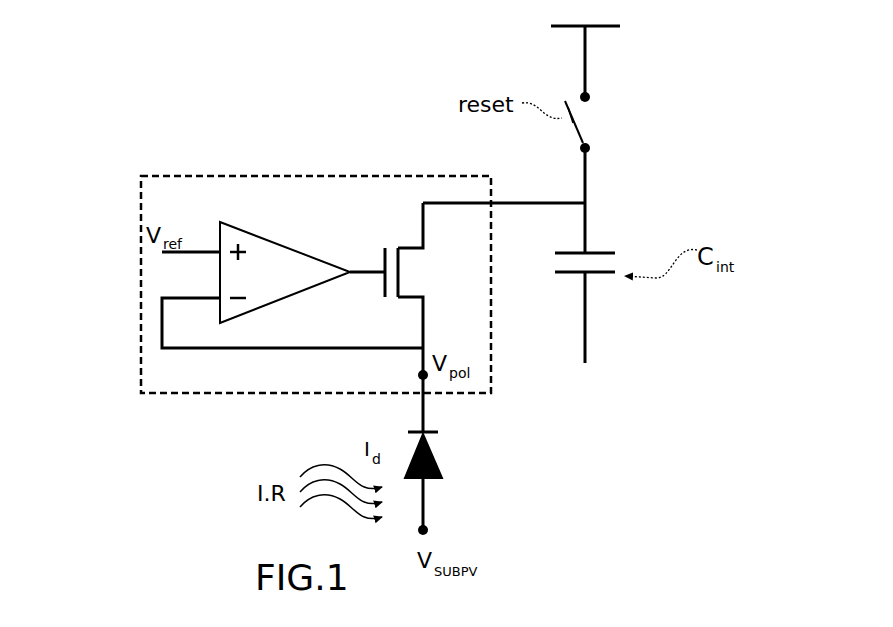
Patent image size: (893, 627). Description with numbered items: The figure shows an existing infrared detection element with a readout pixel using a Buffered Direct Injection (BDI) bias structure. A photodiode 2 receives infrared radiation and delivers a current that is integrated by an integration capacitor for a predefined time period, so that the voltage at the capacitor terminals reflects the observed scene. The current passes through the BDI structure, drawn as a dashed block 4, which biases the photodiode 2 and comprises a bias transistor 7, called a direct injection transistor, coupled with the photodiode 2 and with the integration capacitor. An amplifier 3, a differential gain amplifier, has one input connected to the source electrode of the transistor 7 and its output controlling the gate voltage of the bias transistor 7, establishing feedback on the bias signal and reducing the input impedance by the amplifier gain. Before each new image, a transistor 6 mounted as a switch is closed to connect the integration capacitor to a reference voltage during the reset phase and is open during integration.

The photodiode 2 is at (442, 466).
The amplifier 3 is at (286, 236).
The biasing circuit 4 is at (112, 394).
The transistor mounted as a switch 6 is at (592, 122).
The bias transistor 7 is at (406, 235).